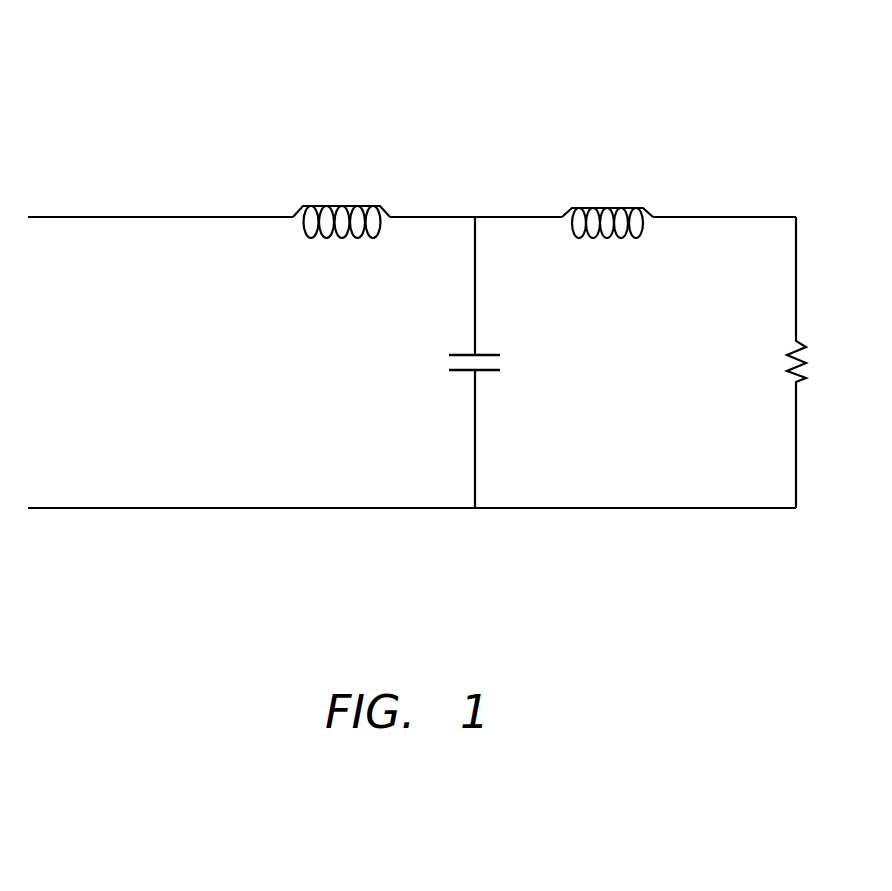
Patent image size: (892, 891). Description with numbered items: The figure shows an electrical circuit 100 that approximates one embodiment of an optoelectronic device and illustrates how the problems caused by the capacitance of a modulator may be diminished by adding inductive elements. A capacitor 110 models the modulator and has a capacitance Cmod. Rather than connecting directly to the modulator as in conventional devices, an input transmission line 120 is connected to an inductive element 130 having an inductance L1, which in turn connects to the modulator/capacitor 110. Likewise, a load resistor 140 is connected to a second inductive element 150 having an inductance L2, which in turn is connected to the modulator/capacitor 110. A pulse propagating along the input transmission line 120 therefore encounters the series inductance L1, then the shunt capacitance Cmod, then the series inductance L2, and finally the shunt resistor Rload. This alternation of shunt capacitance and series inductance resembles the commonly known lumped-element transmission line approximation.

The electrical circuit 100 is at (417, 266).
The capacitor 110 is at (516, 362).
The input transmission line 120 is at (412, 330).
The inductive element 130 is at (341, 254).
The load resistor 140 is at (760, 362).
The inductive element 150 is at (607, 257).